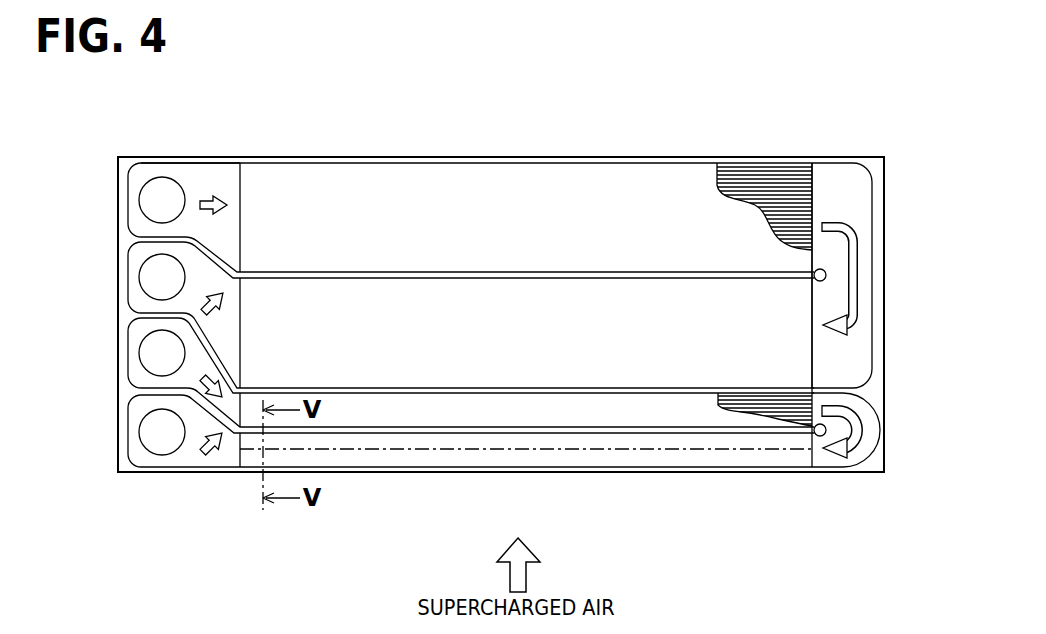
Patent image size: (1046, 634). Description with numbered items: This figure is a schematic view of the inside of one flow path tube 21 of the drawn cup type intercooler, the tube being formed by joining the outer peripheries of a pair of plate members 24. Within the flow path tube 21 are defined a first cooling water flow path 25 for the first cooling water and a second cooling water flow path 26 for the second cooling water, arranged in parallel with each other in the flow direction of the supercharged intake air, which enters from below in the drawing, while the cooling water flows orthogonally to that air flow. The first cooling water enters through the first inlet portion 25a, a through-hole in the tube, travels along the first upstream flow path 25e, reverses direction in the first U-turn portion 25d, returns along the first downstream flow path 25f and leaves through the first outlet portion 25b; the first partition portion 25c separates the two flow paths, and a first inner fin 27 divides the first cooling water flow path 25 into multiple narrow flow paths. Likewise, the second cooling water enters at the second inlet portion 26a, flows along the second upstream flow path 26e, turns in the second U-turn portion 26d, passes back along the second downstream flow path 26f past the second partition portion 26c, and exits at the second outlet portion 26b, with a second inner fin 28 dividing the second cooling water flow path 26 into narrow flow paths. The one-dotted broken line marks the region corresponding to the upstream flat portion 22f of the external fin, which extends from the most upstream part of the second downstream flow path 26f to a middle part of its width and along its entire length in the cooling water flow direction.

The flow path tube 21 is at (292, 157).
The upstream flat portion 22f is at (458, 468).
The plate member 24 is at (630, 157).
The first cooling water flow path 25 is at (872, 205).
The first inlet portion 25a is at (157, 176).
The first outlet portion 25b is at (138, 272).
The first partition portion 25c is at (713, 272).
The first U-turn portion 25d is at (840, 192).
The first upstream flow path 25e is at (375, 200).
The first downstream flow path 25f is at (430, 327).
The second cooling water flow path 26 is at (873, 447).
The second inlet portion 26a is at (138, 350).
The second outlet portion 26b is at (162, 455).
The second partition portion 26c is at (702, 432).
The second U-turn portion 26d is at (842, 458).
The second upstream flow path 26e is at (353, 412).
The second downstream flow path 26f is at (402, 440).
The first inner fin 27 is at (773, 177).
The second inner fin 28 is at (760, 418).